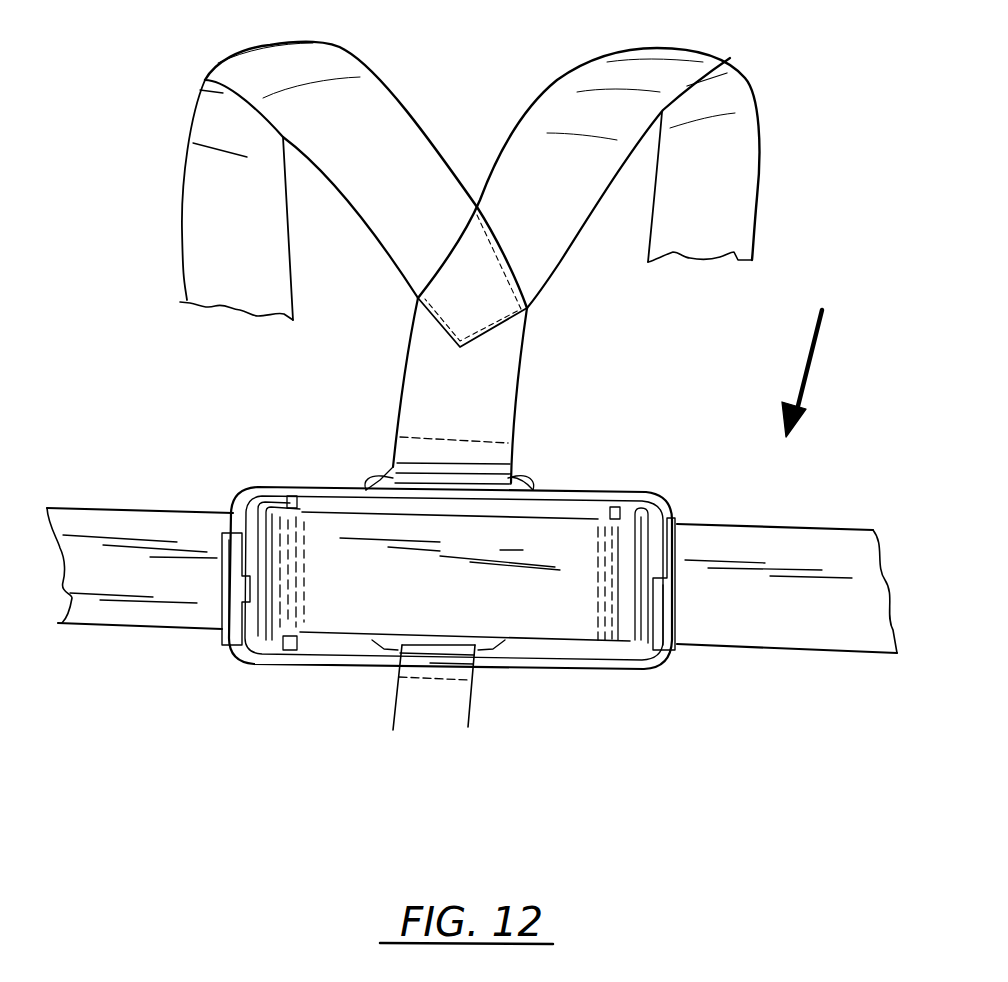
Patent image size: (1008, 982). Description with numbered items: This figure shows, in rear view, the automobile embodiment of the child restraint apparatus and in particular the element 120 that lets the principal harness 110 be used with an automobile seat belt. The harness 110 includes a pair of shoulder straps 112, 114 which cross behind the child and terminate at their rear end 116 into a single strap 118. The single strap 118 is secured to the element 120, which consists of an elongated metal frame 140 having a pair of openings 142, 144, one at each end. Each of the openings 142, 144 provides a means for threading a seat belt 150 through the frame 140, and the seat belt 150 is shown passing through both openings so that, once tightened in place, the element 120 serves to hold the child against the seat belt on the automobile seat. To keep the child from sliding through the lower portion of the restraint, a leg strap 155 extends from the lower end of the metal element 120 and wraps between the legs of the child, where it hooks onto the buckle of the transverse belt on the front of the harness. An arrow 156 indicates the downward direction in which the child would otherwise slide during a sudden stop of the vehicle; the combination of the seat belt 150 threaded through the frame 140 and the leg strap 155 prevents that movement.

The principal harness 110 is at (435, 93).
The shoulder strap 112 is at (209, 123).
The shoulder strap 114 is at (732, 132).
The rear end 116 is at (482, 307).
The single strap 118 is at (490, 406).
The element 120 is at (647, 484).
The elongated metal frame 140 is at (263, 658).
The opening 142 is at (233, 657).
The opening 144 is at (680, 518).
The seat belt 150 is at (768, 605).
The leg strap 155 is at (420, 698).
The arrow 156 is at (810, 368).